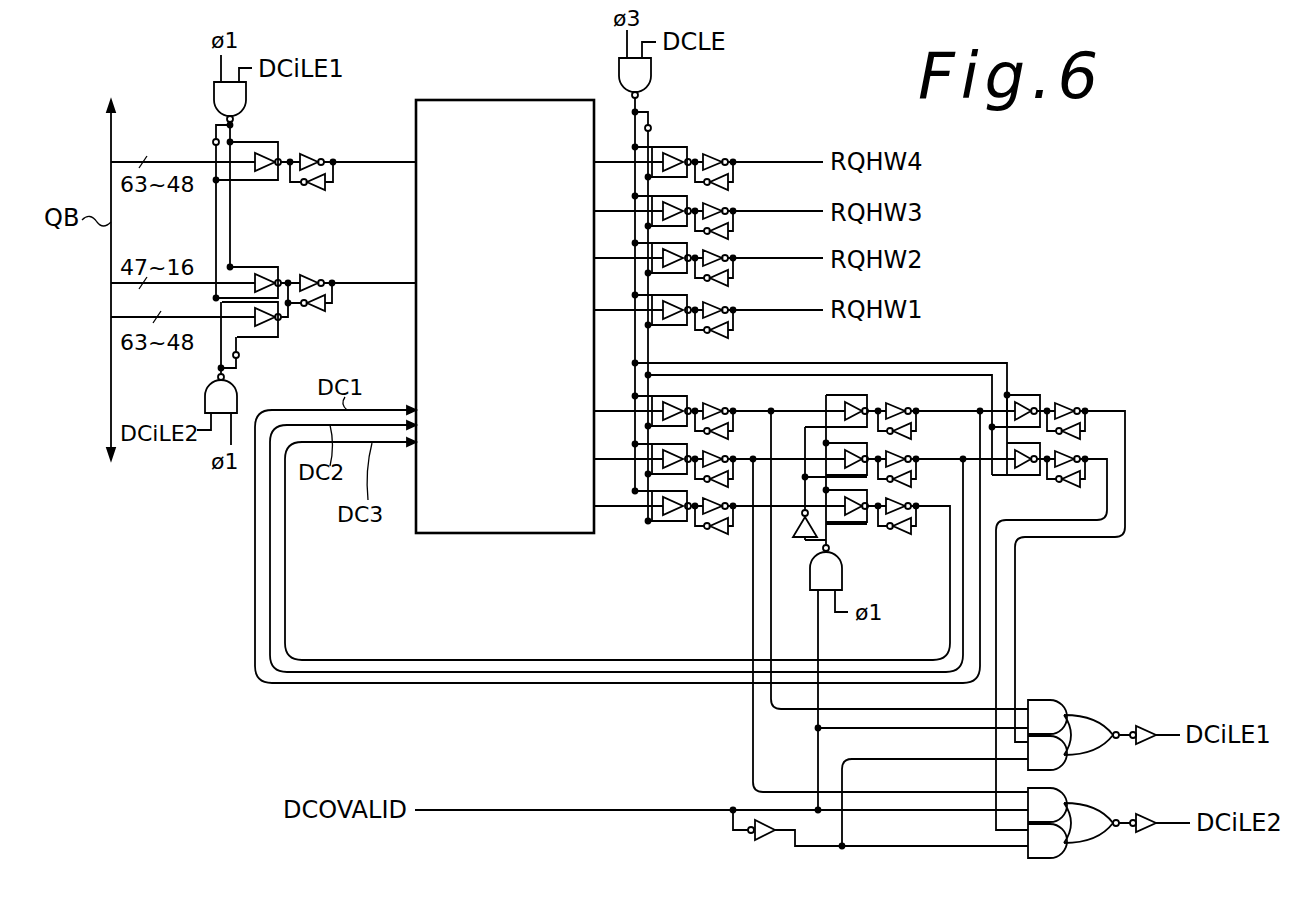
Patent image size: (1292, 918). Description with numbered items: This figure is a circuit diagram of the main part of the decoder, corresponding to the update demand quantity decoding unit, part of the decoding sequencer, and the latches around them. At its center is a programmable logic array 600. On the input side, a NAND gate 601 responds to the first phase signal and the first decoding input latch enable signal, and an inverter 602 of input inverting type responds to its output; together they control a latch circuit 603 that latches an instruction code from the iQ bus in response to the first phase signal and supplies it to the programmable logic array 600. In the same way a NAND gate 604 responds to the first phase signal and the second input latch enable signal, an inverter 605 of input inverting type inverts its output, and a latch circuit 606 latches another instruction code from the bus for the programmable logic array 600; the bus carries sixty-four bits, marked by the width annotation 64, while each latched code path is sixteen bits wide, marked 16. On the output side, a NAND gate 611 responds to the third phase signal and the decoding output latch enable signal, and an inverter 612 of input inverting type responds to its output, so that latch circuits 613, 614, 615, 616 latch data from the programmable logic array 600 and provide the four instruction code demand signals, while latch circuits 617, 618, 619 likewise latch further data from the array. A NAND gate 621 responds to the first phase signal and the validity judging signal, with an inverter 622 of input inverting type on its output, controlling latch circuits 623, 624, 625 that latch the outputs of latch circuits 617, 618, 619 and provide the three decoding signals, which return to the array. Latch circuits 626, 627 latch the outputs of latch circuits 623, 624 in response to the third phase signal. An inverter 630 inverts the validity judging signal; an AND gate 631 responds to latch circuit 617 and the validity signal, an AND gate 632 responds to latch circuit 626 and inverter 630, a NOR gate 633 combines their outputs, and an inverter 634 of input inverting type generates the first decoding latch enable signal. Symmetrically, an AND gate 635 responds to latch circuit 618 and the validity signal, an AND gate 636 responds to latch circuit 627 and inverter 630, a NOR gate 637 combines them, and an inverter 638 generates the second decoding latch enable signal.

The programmable logic array 600 is at (541, 535).
The NAND gate 601 is at (216, 96).
The inverter of input inverting type 602 is at (213, 139).
The latch circuit 603 is at (303, 148).
The NAND gate 604 is at (210, 396).
The inverter of input inverting type 605 is at (245, 355).
The latch circuit 606 is at (298, 272).
The NAND gate 611 is at (653, 72).
The inverter of input inverting type 612 is at (653, 131).
The latch circuit 613 is at (717, 147).
The latch circuit 614 is at (735, 200).
The latch circuit 615 is at (740, 250).
The latch circuit 616 is at (740, 301).
The latch circuit 617 is at (708, 400).
The latch circuit 618 is at (710, 457).
The latch circuit 619 is at (690, 530).
The NAND gate 621 is at (845, 576).
The inverter of input inverting type 622 is at (790, 541).
The latch circuit 623 is at (897, 405).
The latch circuit 624 is at (898, 454).
The latch circuit 625 is at (892, 532).
The latch circuit 626 is at (1072, 400).
The latch circuit 627 is at (1090, 452).
The inverter 630 is at (768, 840).
The AND gate 631 is at (1047, 716).
The AND gate 632 is at (1060, 760).
The NOR gate 633 is at (1093, 740).
The inverter of input inverting type 634 is at (1147, 728).
The AND gate 635 is at (1057, 800).
The AND gate 636 is at (1035, 857).
The NOR gate 637 is at (1088, 828).
The inverter of input inverting type 638 is at (1150, 828).
The bus width 64 is at (112, 397).
The bus width 16 is at (376, 278).